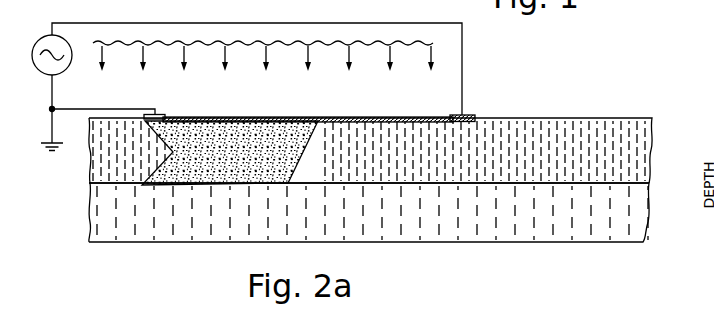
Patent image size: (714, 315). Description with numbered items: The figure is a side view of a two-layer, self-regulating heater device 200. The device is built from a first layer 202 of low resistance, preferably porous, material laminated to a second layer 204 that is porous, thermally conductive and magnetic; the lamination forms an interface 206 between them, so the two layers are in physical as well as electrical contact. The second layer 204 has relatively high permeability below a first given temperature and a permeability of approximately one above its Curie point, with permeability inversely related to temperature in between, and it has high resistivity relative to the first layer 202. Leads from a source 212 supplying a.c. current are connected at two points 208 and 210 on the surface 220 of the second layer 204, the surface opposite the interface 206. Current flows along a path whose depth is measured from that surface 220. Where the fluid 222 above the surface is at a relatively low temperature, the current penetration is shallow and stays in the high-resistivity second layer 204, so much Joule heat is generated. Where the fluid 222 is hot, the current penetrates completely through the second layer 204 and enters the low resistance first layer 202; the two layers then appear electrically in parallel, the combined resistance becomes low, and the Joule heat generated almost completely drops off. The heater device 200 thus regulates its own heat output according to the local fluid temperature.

The heater device 200 is at (359, 158).
The first layer 202 is at (543, 233).
The second layer 204 is at (630, 122).
The interface 206 is at (90, 185).
The connection point 208 is at (160, 112).
The connection point 210 is at (472, 113).
The source 212 is at (45, 30).
The surface 220 is at (572, 117).
The fluid 222 is at (292, 43).